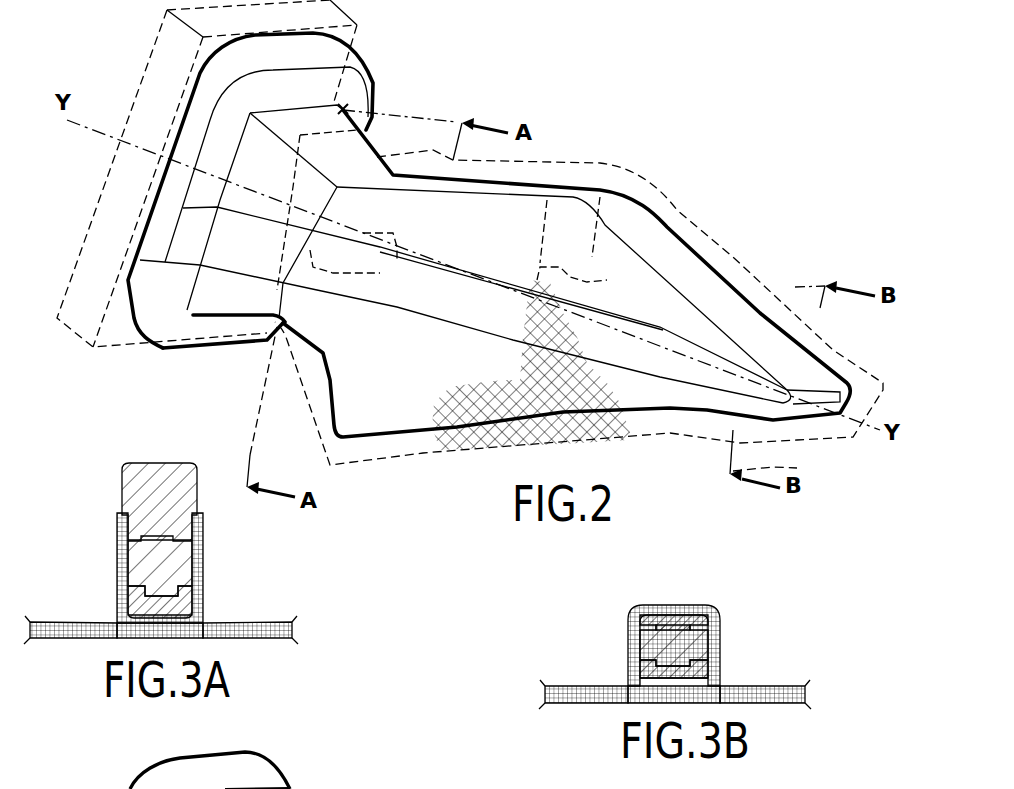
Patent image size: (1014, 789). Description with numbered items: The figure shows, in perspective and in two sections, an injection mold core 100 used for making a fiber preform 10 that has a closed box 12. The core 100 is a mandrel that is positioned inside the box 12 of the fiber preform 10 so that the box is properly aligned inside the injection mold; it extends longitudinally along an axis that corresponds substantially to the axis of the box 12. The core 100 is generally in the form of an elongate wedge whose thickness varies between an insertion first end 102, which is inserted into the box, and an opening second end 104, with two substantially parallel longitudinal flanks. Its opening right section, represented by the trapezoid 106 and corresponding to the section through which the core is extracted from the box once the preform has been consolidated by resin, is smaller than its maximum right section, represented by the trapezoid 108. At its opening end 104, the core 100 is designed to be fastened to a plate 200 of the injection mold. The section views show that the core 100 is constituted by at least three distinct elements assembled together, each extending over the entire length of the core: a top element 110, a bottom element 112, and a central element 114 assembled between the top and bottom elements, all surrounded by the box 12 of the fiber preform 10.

In FIG. 3A, the fiber preform 10 is at (56, 615).
In FIG. 3B, the fiber preform 10 is at (775, 677).
In FIG. 2, the box 12 is at (730, 248).
In FIG. 3A, the box 12 is at (116, 559).
In FIG. 3B, the box 12 is at (726, 629).
In FIG. 2, the core 100 is at (636, 120).
In FIG. 2, the insertion first end 102 is at (837, 361).
In FIG. 2, the opening second end 104 is at (348, 107).
In FIG. 2, the trapezoid 106 is at (373, 273).
In FIG. 2, the trapezoid 108 is at (598, 273).
In FIG. 2, the top element 110 is at (663, 223).
In FIG. 3A, the top element 110 is at (140, 496).
In FIG. 3B, the top element 110 is at (680, 624).
In FIG. 2, the bottom element 112 is at (415, 407).
In FIG. 3A, the bottom element 112 is at (173, 606).
In FIG. 3B, the bottom element 112 is at (650, 673).
In FIG. 2, the central element 114 is at (697, 373).
In FIG. 3A, the central element 114 is at (166, 566).
In FIG. 3B, the central element 114 is at (647, 640).
In FIG. 2, the plate 200 is at (143, 82).